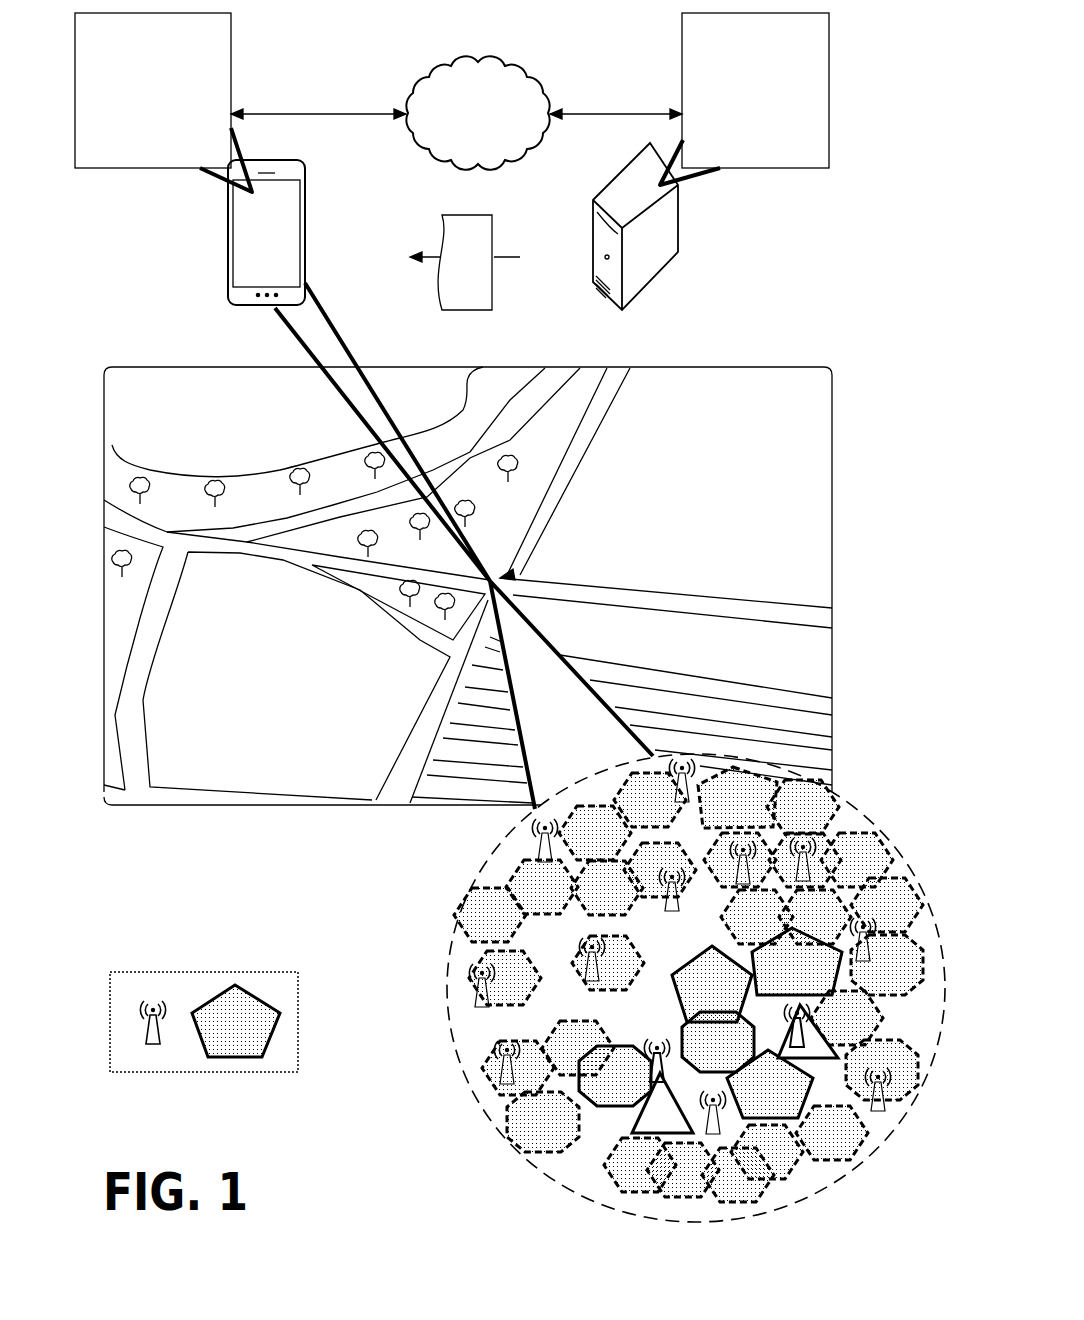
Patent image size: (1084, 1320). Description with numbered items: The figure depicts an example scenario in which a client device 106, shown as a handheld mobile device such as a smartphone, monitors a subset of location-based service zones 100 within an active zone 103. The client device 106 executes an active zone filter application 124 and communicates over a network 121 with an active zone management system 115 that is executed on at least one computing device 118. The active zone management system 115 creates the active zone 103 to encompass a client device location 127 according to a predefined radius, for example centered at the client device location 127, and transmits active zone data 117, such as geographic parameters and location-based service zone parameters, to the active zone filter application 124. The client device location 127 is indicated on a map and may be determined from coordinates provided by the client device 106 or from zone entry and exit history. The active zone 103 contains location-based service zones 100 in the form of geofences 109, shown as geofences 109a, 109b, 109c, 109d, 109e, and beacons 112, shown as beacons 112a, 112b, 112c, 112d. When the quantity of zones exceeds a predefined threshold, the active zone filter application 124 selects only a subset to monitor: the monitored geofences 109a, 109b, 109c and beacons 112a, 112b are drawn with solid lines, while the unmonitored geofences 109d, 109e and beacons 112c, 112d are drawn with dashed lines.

The location-based service zones 100 is at (204, 1026).
The active zone 103 is at (447, 968).
The client device 106 is at (228, 238).
The geofences 109 is at (236, 1021).
The geofence 109a is at (712, 984).
The geofence 109b is at (718, 1042).
The geofence 109c is at (770, 1084).
The geofence 109d is at (543, 1122).
The geofence 109e is at (828, 961).
The beacons 112 is at (160, 1000).
The beacon 112a is at (803, 1057).
The beacon 112b is at (653, 1063).
The beacon 112c is at (483, 985).
The beacon 112d is at (553, 842).
The active zone management system 115 is at (744, 99).
The active zone data 117 is at (465, 262).
The computing device 118 is at (653, 243).
The network 121 is at (477, 112).
The active zone filter application 124 is at (163, 102).
The client device location 127 is at (506, 576).